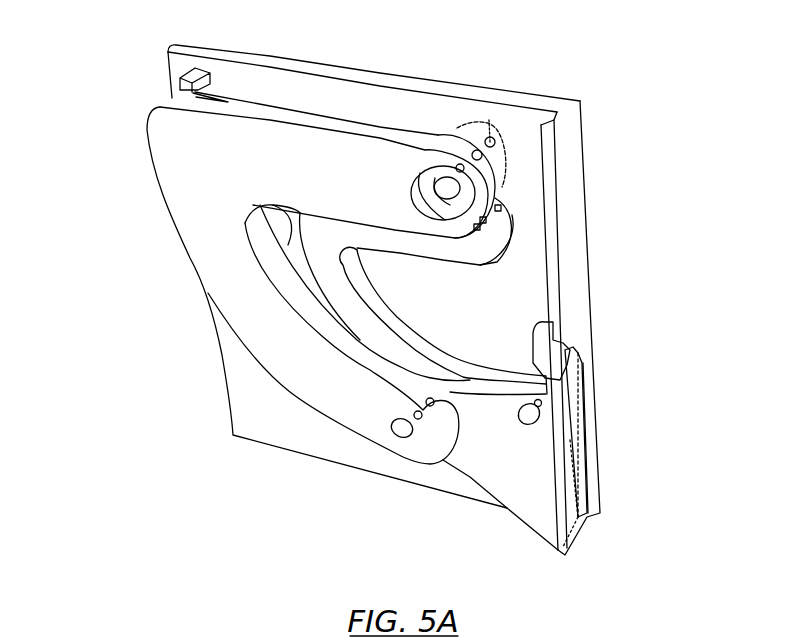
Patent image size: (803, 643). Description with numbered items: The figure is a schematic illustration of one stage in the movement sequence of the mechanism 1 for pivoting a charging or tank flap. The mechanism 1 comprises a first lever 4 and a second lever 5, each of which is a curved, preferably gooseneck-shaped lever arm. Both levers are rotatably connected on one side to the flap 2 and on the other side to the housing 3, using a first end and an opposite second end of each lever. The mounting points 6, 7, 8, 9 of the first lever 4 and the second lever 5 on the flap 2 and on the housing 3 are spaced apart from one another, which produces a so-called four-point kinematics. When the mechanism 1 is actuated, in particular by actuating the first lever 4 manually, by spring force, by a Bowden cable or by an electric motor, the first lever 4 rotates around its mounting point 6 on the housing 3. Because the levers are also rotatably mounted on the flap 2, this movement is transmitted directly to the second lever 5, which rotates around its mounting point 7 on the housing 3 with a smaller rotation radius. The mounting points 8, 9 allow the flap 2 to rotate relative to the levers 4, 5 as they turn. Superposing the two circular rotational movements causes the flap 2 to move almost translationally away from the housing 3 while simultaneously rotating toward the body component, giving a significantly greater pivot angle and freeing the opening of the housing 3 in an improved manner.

The mechanism 1 is at (427, 150).
The flap 2 is at (580, 517).
The housing 3 is at (657, 168).
The first lever 4 is at (107, 262).
The second lever 5 is at (142, 197).
The mounting point 6 is at (592, 61).
The mounting point 7 is at (619, 115).
The mounting point 8 is at (218, 371).
The mounting point 9 is at (678, 288).